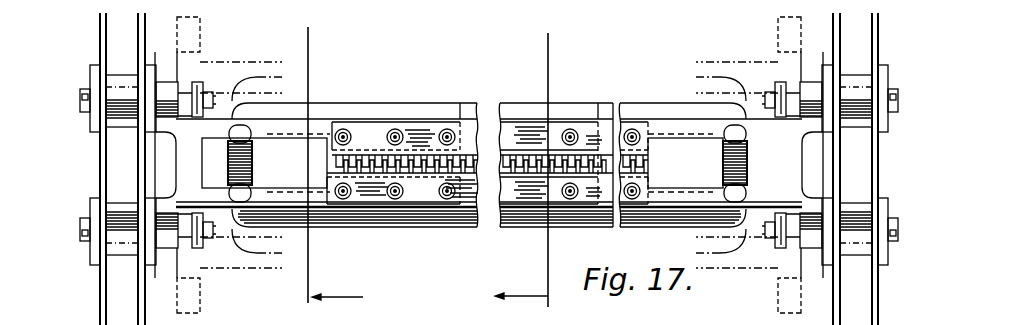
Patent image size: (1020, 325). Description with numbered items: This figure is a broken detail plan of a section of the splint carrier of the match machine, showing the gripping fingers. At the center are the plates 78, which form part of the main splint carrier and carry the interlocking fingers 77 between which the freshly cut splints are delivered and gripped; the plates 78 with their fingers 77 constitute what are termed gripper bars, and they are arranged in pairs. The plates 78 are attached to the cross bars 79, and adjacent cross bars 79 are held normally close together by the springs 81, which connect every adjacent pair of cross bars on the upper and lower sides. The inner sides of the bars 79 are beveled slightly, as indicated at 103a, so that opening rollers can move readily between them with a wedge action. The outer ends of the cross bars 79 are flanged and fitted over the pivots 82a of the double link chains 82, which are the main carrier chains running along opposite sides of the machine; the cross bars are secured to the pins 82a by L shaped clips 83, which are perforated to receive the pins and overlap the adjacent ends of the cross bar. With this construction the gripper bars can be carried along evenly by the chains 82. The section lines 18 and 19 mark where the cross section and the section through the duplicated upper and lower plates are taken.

The double link chains 82 is at (140, 36).
The pivots 82a is at (212, 90).
The L shaped clips 83 is at (200, 82).
The cross bars 79 is at (313, 126).
The plates 78 is at (467, 125).
The interlocking fingers 77 is at (373, 157).
The springs 81 is at (252, 163).
The bevel 103a is at (672, 170).
The section line 18— 18 is at (325, 164).
The section line 19— 19 is at (529, 168).